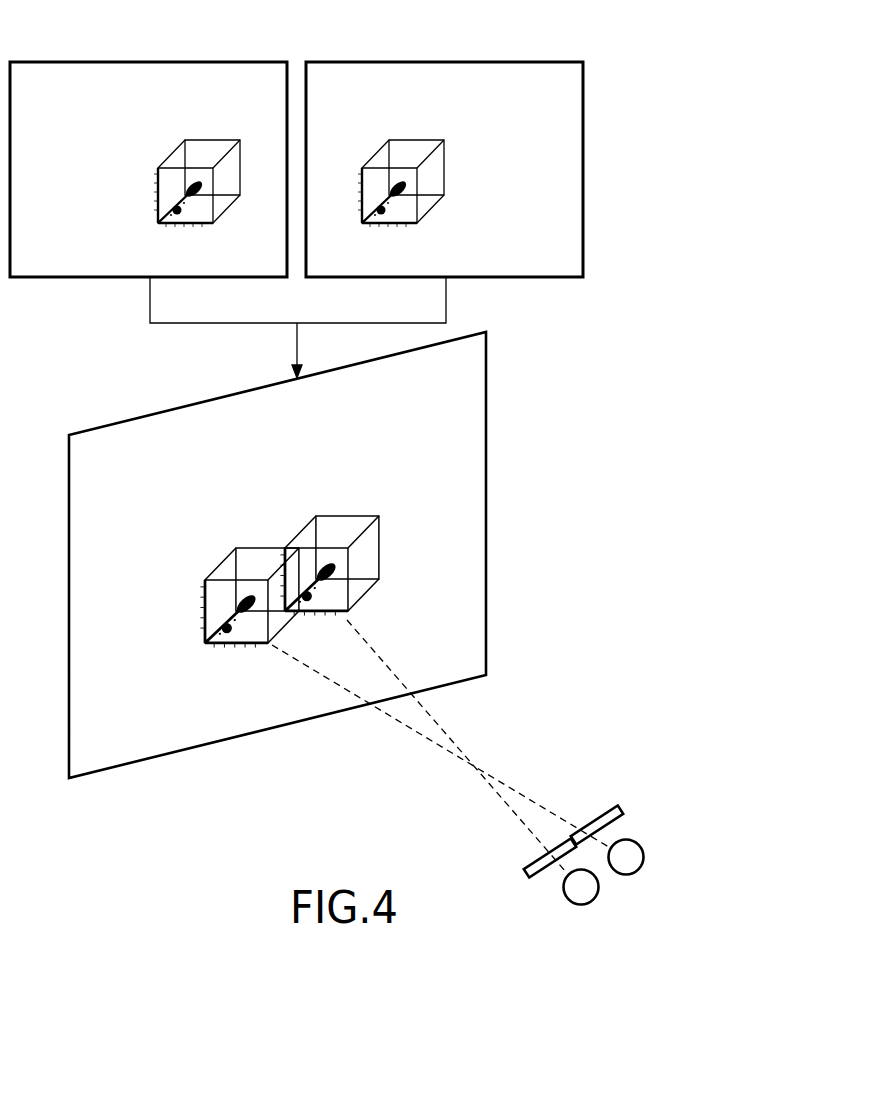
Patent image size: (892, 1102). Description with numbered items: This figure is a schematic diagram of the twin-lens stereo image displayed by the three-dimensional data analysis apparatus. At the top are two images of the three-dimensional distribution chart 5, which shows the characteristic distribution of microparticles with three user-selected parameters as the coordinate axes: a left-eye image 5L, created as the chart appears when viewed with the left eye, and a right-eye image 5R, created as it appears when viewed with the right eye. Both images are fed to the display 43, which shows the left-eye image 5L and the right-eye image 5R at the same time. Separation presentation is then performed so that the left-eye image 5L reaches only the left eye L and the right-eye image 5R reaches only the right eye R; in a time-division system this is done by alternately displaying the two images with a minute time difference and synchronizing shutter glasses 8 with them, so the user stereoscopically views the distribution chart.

The left-eye image 5L is at (80, 62).
The right-eye image 5R is at (407, 62).
The 3D distribution chart 5 is at (211, 140).
The display 43 is at (486, 494).
The shutter glasses 8 is at (603, 802).
The right eye R is at (644, 857).
The left eye L is at (581, 905).